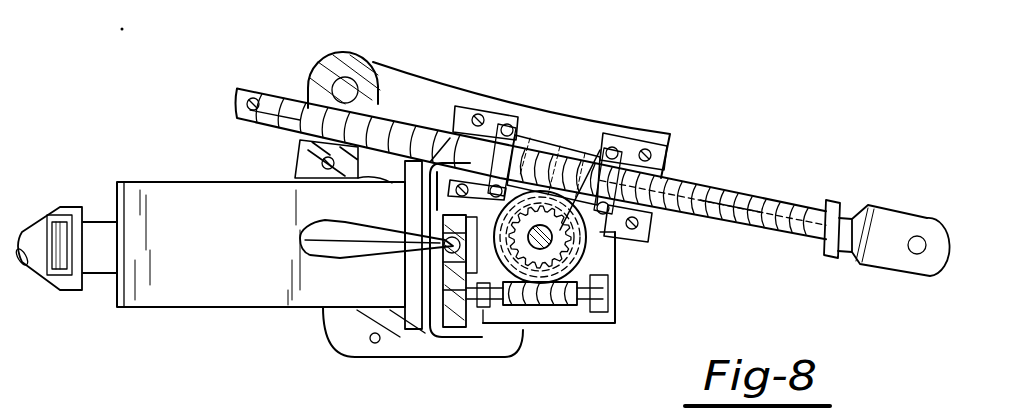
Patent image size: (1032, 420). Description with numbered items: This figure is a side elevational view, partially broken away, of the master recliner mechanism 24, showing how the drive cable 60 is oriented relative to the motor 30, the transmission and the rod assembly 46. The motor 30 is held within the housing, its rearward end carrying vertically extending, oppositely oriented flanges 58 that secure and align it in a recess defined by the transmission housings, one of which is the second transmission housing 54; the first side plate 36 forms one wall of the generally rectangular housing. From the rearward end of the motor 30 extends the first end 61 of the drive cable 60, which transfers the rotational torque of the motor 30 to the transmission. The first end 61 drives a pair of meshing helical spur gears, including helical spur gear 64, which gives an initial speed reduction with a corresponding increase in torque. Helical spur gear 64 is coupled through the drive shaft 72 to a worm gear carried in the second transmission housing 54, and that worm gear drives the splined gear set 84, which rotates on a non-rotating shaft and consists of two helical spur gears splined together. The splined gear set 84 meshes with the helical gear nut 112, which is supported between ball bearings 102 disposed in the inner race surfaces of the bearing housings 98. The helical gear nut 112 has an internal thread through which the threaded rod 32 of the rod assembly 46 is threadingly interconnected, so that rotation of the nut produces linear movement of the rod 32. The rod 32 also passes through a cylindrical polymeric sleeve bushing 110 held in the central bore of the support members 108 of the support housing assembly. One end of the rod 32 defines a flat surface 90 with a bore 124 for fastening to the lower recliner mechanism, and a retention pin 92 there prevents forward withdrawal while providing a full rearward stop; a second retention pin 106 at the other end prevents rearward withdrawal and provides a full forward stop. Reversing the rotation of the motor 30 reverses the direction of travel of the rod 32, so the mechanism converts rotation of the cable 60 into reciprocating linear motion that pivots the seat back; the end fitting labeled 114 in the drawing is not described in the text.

The master recliner mechanism 24 is at (640, 118).
The motor 30 is at (250, 282).
The threaded rod 32 is at (750, 226).
The first side plate 36 is at (482, 92).
The rod assembly 46 is at (765, 193).
The second transmission housing 54 is at (595, 325).
The flanges 58 is at (413, 322).
The drive cable 60 is at (365, 248).
The first end of drive cable 61 is at (447, 238).
The helical spur gear 64 is at (470, 327).
The drive shaft 72 is at (518, 303).
The splined gear set 84 is at (565, 260).
The flat surface 90 is at (878, 265).
The retention pin 92 is at (840, 210).
The bearing housings 98 is at (512, 116).
The ball bearings 102 is at (520, 135).
The retention pin 106 is at (257, 100).
The support members 108 is at (353, 78).
The sleeve bushing 110 is at (293, 130).
The helical gear nut 112 is at (575, 148).
The eye fitting 114 is at (66, 292).
The bore 124 is at (918, 256).